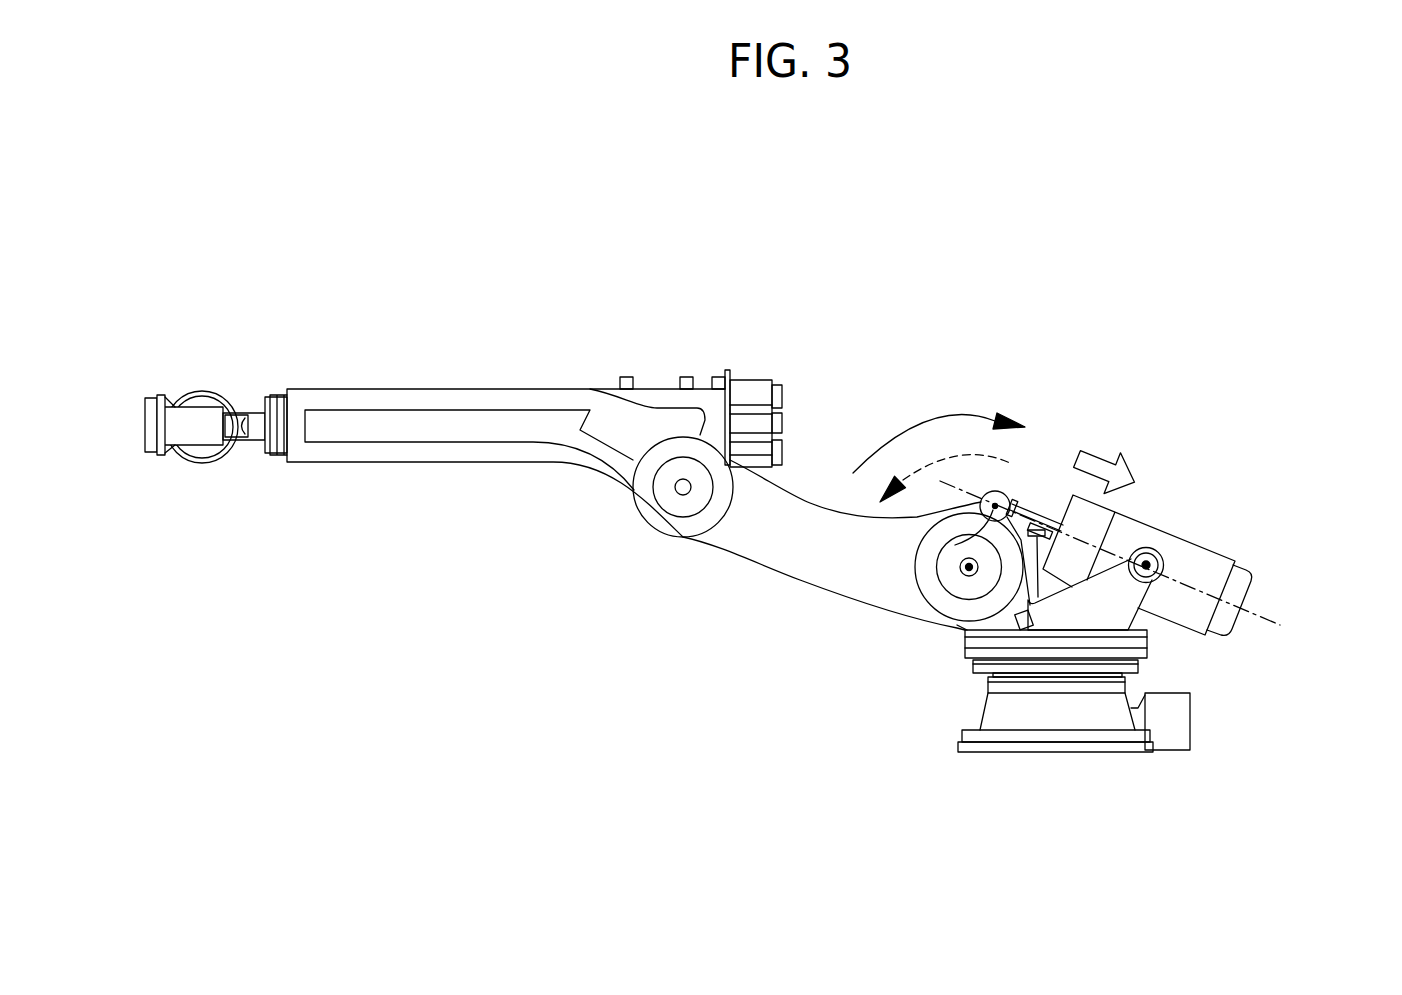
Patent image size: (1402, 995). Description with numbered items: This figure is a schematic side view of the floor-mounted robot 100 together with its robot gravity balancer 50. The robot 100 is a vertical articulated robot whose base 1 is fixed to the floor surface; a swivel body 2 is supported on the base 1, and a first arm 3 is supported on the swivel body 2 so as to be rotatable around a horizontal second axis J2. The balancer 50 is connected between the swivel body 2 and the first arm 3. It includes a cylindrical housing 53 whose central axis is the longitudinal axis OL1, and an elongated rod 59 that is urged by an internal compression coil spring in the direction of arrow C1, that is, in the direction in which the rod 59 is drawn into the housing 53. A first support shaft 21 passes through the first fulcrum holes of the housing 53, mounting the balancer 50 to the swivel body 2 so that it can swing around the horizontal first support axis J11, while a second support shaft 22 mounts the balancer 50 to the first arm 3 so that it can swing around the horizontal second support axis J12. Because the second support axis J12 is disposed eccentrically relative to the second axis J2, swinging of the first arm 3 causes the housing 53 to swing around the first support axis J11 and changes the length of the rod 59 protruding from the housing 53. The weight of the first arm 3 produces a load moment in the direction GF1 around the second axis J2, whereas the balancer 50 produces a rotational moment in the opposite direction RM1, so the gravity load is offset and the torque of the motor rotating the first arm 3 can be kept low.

The robot 100 is at (967, 231).
The base 1 is at (980, 717).
The swivel body 2 is at (965, 643).
The first arm 3 is at (810, 503).
The first support shaft 21 is at (1153, 555).
The second support shaft 22 is at (1000, 492).
The robot gravity balancer 50 is at (1229, 524).
The housing 53 is at (1218, 567).
The rod 59 is at (1041, 507).
The first support axis J11 is at (1152, 580).
The second support axis J12 is at (955, 545).
The second axis J2 is at (969, 567).
The arrow direction C1 is at (1103, 455).
The load moment direction GF1 is at (920, 467).
The rotational moment direction RM1 is at (950, 417).
The longitudinal axis OL1 is at (1133, 560).